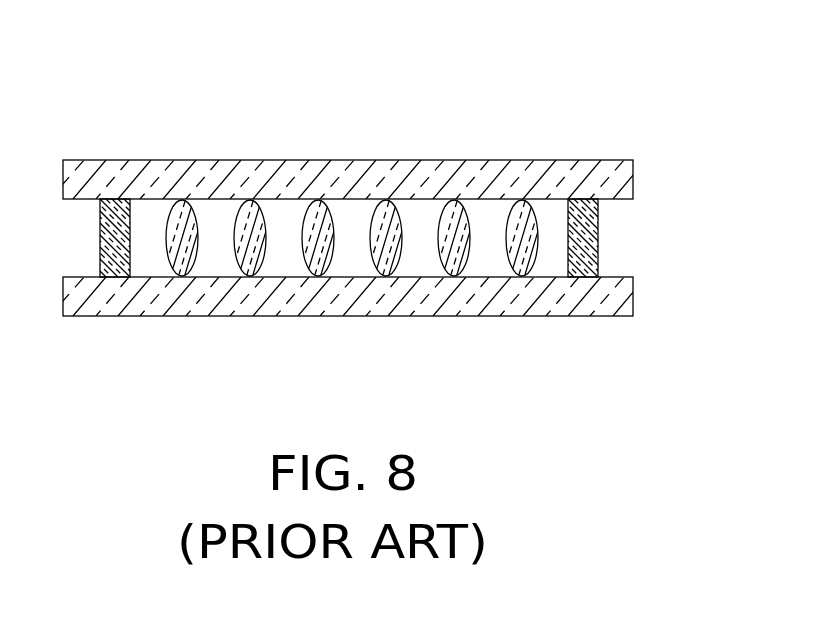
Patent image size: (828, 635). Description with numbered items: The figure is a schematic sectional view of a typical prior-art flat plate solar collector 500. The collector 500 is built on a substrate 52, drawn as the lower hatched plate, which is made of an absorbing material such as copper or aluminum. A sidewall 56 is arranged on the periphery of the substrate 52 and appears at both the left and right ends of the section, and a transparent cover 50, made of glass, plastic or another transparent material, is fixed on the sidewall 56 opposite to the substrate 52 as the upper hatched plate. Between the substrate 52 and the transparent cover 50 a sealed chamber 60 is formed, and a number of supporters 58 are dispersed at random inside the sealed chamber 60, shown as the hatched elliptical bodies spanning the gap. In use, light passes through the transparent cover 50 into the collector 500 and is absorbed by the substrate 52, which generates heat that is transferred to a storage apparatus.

The flat plate collector 500 is at (357, 40).
The transparent cover 50 is at (618, 181).
The substrate 52 is at (620, 294).
The sidewall 56 is at (102, 237).
The supporters 58 is at (323, 203).
The sealed chamber 60 is at (155, 213).